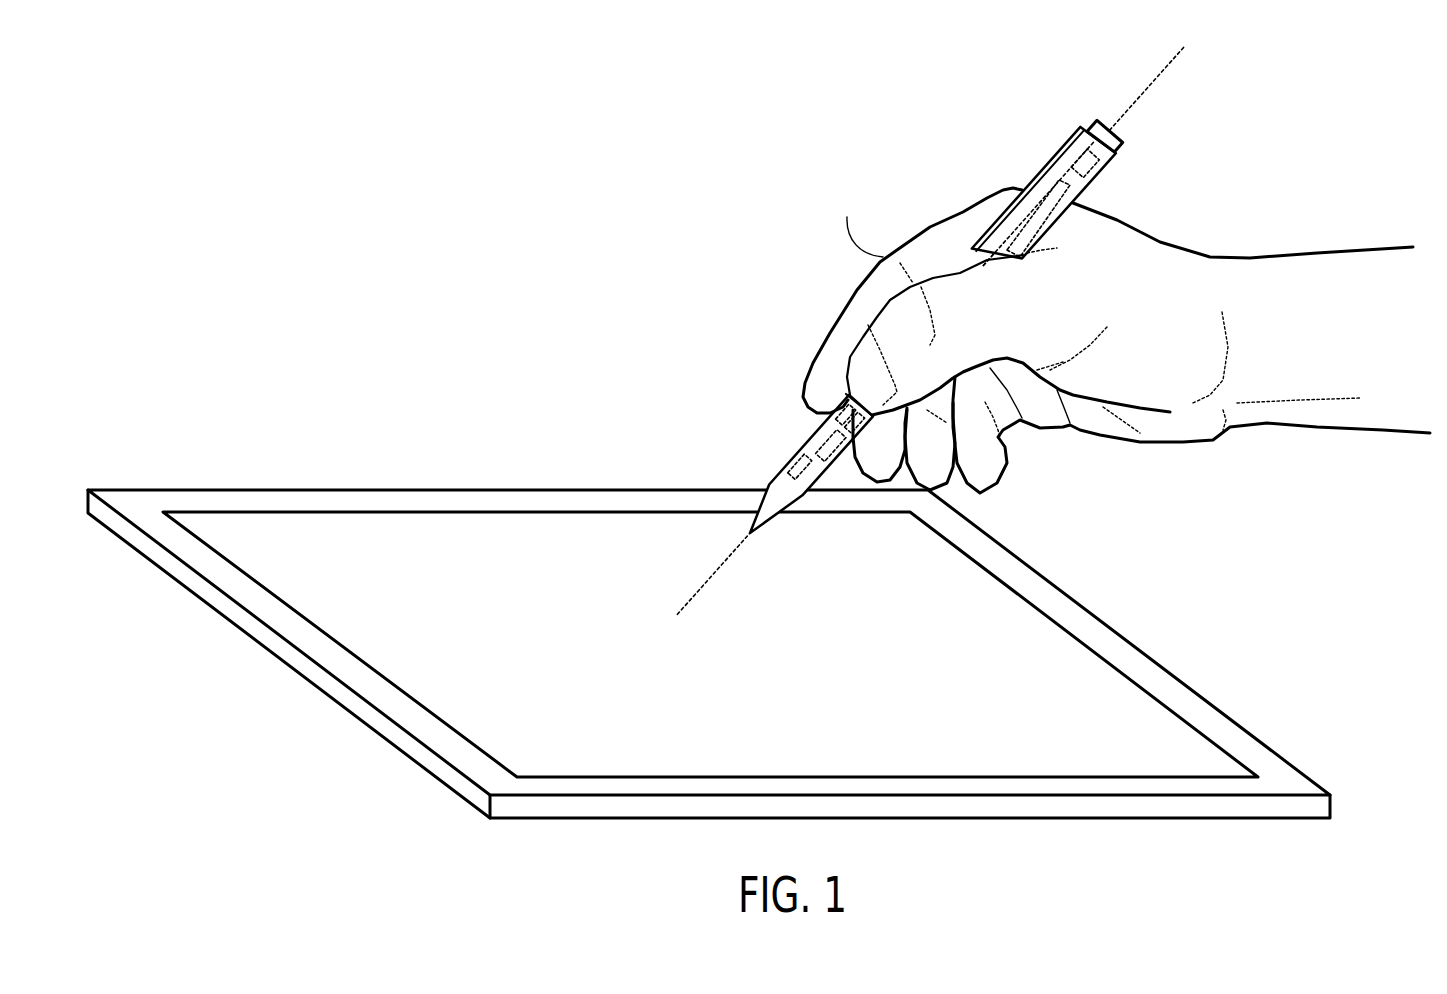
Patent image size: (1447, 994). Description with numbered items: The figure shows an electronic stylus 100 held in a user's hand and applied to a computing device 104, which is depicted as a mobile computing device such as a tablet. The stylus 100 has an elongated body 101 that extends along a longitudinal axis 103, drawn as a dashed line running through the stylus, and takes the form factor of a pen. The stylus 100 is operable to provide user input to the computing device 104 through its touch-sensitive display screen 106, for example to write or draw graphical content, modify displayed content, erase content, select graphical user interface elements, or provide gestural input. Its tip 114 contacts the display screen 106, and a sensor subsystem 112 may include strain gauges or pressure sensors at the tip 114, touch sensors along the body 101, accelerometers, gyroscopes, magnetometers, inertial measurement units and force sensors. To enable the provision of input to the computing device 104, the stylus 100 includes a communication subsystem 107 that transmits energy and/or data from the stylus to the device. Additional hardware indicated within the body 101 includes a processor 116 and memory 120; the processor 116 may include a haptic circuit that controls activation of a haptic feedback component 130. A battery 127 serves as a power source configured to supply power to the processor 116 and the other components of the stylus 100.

The electronic stylus 100 is at (930, 322).
The elongated body 101 is at (1016, 222).
The longitudinal axis 103 is at (1157, 77).
The computing device 104 is at (736, 654).
The touch-sensitive display screen 106 is at (904, 557).
The communication subsystem 107 is at (823, 447).
The sensor subsystem 112 is at (1102, 173).
The tip 114 is at (757, 536).
The processor 116 is at (843, 417).
The memory 120 is at (850, 398).
The battery 127 is at (1005, 253).
The haptic feedback component 130 is at (798, 475).